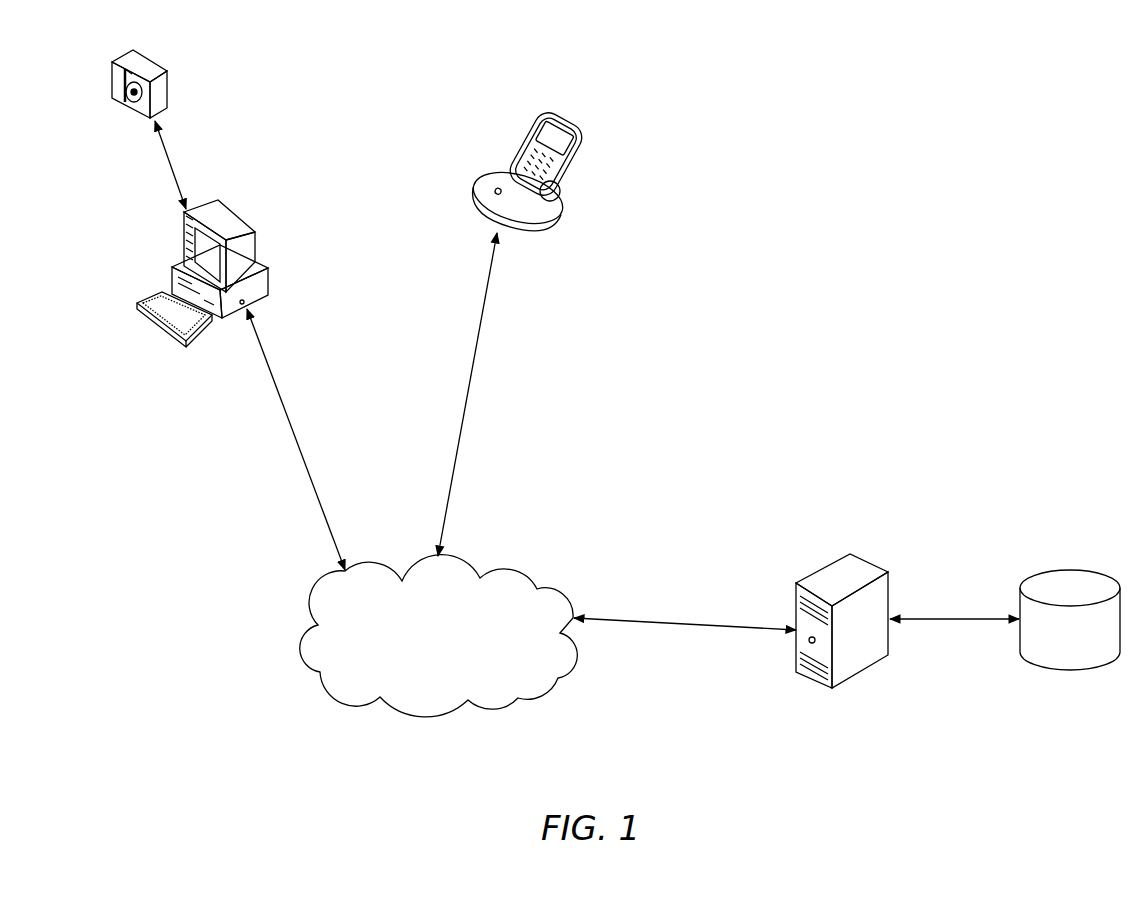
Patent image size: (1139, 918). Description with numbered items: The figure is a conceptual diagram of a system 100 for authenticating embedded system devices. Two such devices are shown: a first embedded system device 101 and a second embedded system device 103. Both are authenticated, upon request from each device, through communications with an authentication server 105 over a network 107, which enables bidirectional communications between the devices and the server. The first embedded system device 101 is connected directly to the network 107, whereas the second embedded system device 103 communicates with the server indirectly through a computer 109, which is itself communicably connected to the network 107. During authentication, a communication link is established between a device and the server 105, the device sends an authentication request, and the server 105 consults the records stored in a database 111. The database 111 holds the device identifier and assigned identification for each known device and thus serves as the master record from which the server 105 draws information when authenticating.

The system 100 is at (794, 201).
The first embedded system device 101 is at (556, 116).
The second embedded system device 103 is at (147, 58).
The authentication server 105 is at (813, 677).
The network 107 is at (318, 626).
The computer 109 is at (222, 212).
The database 111 is at (1072, 668).